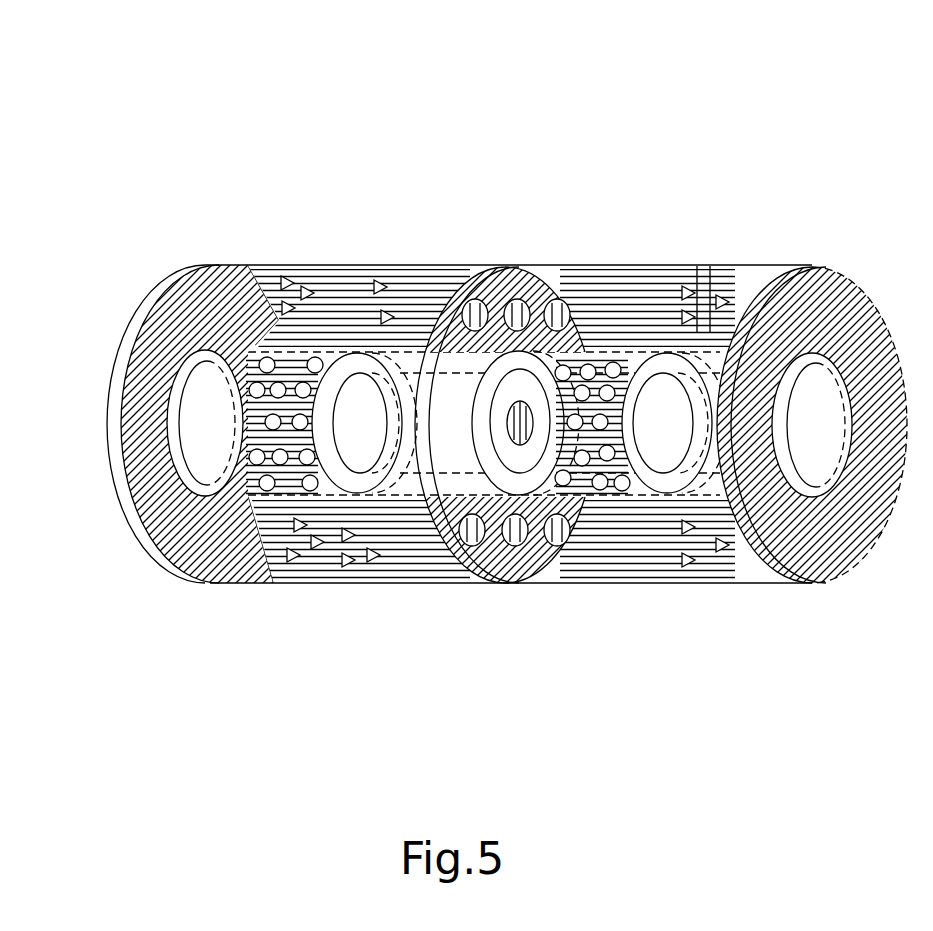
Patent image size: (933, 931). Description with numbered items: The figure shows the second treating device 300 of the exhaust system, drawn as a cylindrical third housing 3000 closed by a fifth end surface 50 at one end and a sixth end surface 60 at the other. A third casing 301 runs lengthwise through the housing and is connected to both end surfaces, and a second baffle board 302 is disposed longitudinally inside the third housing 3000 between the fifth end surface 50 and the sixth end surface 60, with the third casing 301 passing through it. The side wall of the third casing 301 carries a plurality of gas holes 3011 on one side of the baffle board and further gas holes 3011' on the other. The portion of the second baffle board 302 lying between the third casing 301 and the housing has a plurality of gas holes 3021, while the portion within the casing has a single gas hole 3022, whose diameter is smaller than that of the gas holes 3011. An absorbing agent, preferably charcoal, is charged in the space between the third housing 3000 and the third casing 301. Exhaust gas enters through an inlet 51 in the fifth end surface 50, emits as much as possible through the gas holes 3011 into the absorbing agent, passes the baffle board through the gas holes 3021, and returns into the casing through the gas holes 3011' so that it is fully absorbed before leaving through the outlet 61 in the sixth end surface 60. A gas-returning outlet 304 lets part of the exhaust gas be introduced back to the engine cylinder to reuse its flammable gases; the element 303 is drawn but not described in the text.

The second treating device 300 is at (238, 678).
The third housing 3000 is at (350, 602).
The fifth end surface 50 is at (165, 577).
The inlet 51 is at (200, 377).
The sixth end surface 60 is at (835, 560).
The outlet 61 is at (826, 403).
The third casing 301 is at (333, 345).
The gas holes 3011 is at (220, 264).
The gas holes 3011' is at (583, 547).
The second baffle board 302 is at (458, 282).
The gas holes 3021 is at (497, 280).
The gas hole 3022 is at (518, 452).
The second bearing ring 303 is at (717, 533).
The gas-returning outlet 304 is at (703, 258).